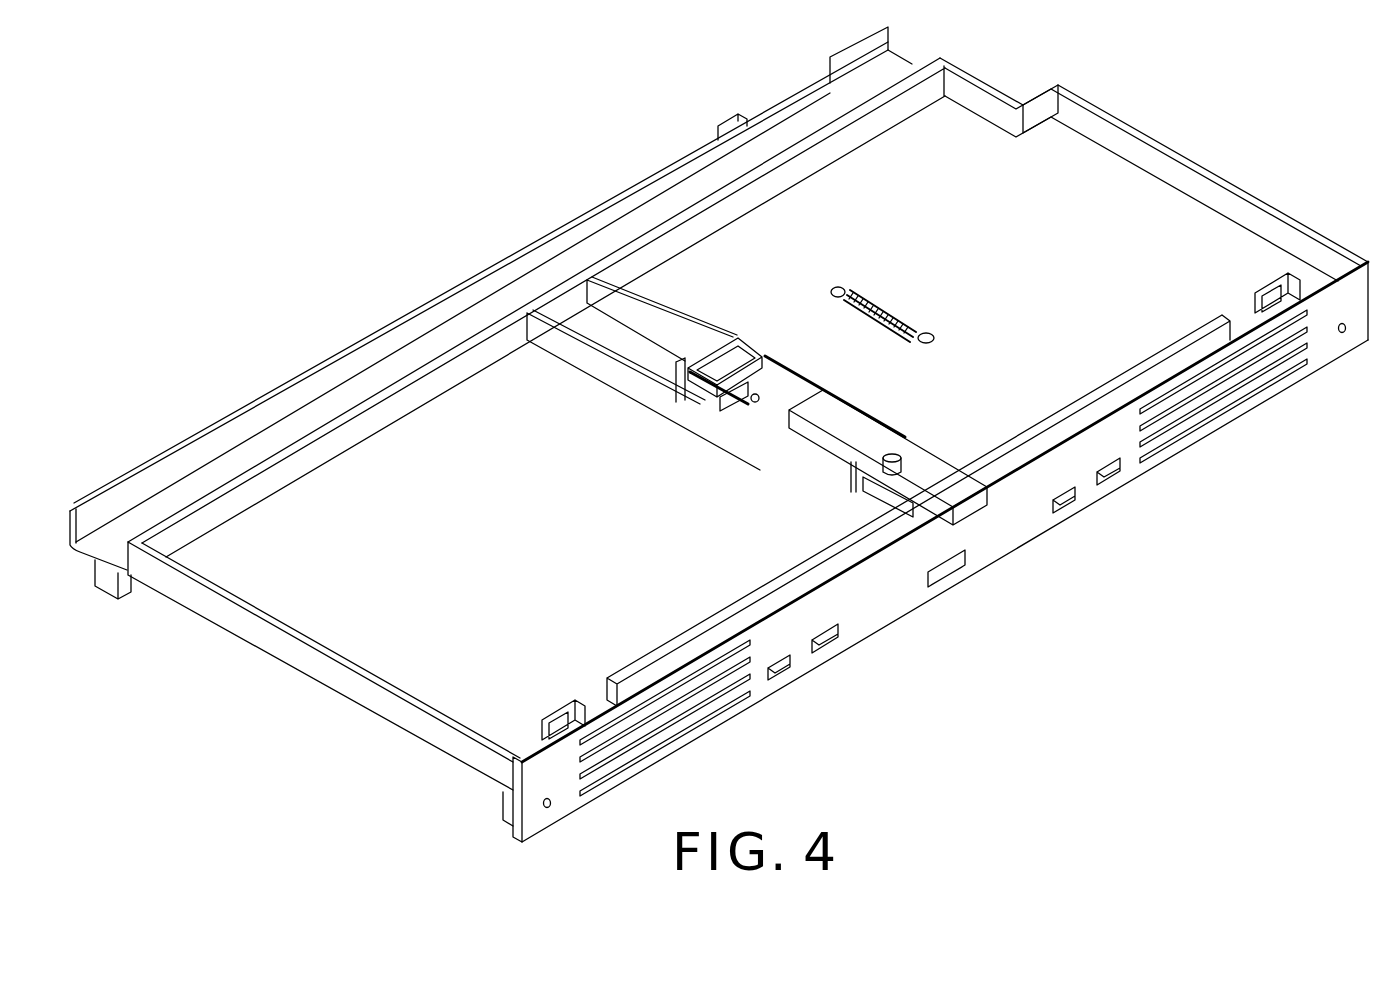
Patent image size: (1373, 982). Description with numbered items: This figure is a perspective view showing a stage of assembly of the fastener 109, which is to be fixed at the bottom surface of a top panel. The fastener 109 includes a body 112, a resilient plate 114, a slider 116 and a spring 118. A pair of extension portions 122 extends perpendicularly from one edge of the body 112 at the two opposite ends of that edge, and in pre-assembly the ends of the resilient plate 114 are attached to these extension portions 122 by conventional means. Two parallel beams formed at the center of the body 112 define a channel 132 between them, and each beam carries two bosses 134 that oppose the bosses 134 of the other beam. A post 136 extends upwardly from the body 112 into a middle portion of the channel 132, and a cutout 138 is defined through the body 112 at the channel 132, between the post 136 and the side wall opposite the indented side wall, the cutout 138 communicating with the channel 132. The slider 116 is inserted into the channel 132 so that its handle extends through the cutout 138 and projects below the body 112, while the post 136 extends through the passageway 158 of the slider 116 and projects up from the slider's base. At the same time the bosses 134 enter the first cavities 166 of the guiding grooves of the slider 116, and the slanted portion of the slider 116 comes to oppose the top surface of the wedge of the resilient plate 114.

The fastener 109 is at (398, 108).
The body 112 is at (1080, 182).
The resilient plate 114 is at (1003, 531).
The slider 116 is at (740, 380).
The spring 118 is at (893, 302).
The extension portions 122 is at (1251, 218).
The channel 132 is at (647, 350).
The bosses 134 is at (688, 410).
The post 136 is at (752, 396).
The cutout 138 is at (677, 387).
The passageway 158 is at (807, 417).
The first cavities 166 is at (720, 390).